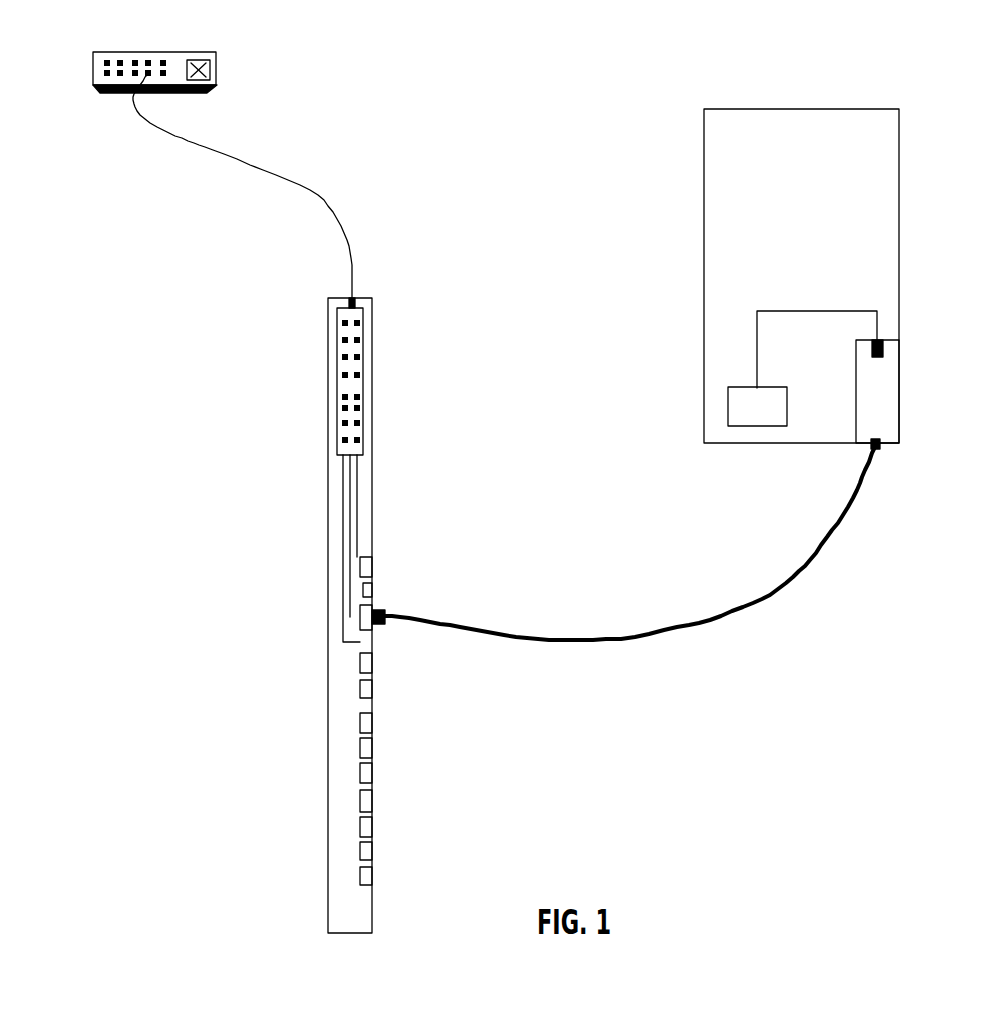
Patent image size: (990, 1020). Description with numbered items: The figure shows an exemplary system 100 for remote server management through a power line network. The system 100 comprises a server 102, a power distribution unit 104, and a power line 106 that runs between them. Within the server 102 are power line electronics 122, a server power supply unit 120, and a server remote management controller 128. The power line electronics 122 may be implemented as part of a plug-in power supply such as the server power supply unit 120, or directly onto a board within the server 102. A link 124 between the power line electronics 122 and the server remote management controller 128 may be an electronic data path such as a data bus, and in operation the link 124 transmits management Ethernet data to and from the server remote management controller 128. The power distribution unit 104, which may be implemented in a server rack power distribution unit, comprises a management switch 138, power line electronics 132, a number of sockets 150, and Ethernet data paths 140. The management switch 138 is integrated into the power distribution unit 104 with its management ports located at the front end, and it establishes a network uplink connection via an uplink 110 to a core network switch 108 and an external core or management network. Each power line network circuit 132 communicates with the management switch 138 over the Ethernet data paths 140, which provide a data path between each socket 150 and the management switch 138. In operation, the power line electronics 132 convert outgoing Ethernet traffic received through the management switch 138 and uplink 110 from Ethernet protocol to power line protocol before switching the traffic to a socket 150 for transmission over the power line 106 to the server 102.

The system 100 is at (591, 34).
The server 102 is at (815, 199).
The power distribution unit 104 is at (328, 825).
The power line 106 is at (790, 592).
The core network switch 108 is at (155, 60).
The uplink 110 is at (302, 196).
The server power supply unit 120 is at (876, 391).
The power line electronics 122 is at (887, 342).
The link 124 is at (752, 323).
The server remote management controller 128 is at (743, 413).
The power line electronics 132 is at (362, 625).
The management switch 138 is at (328, 347).
The Ethernet data paths 140 is at (345, 510).
The sockets 150 is at (372, 850).